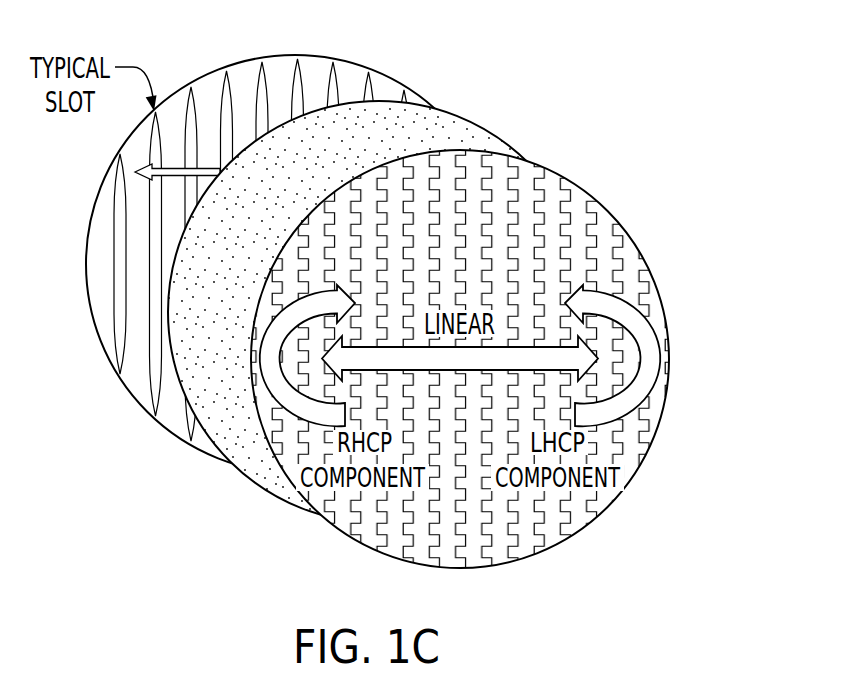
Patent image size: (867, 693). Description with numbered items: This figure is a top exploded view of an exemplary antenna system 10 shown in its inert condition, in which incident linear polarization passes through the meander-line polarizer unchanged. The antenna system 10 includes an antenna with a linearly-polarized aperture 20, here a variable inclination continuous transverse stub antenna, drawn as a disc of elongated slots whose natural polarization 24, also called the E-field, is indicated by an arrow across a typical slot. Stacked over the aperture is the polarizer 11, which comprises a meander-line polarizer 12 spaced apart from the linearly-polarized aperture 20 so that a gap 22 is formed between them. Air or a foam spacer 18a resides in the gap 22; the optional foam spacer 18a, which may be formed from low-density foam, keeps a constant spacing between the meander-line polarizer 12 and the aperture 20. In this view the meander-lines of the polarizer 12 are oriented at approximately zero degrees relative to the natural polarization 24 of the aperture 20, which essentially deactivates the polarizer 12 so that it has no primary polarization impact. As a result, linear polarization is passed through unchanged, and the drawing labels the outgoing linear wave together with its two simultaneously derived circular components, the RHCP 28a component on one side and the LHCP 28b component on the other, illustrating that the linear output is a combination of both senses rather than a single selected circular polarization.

The antenna system 10 is at (520, 72).
The polarizer 11 is at (636, 506).
The meander-line polarizer 12 is at (480, 168).
The foam spacer 18a is at (398, 125).
The linearly-polarized aperture 20 is at (316, 75).
The gap 22 is at (220, 474).
The natural polarization 24 is at (210, 160).
The RHCP 28a is at (276, 384).
The LHCP 28b is at (632, 313).